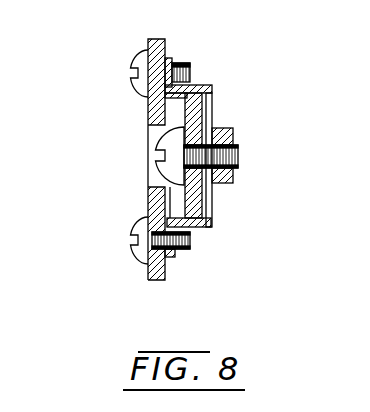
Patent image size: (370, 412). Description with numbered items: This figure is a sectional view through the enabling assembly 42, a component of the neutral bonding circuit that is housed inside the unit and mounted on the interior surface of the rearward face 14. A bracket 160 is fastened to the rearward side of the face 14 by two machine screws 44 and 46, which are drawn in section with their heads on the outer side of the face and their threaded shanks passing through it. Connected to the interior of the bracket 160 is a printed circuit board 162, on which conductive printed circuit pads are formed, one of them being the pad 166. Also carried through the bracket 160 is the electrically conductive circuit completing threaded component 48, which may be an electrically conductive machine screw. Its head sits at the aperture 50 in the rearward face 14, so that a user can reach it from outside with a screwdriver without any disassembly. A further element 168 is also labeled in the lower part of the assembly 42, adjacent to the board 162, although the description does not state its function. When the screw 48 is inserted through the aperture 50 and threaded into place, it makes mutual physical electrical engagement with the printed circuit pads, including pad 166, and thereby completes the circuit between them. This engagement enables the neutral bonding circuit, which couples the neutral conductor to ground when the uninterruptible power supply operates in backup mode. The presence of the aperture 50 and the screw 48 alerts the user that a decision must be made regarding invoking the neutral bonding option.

The rearward face 14 is at (158, 38).
The enabling assembly 42 is at (102, 113).
The screw 44 is at (138, 65).
The screw 46 is at (138, 222).
The circuit completing threaded component 48 is at (238, 158).
The aperture 50 is at (155, 133).
The bracket 160 is at (211, 88).
The printed circuit board 162 is at (209, 103).
The conductive printed circuit pad 166 is at (211, 126).
The lower spacer 168 is at (192, 188).